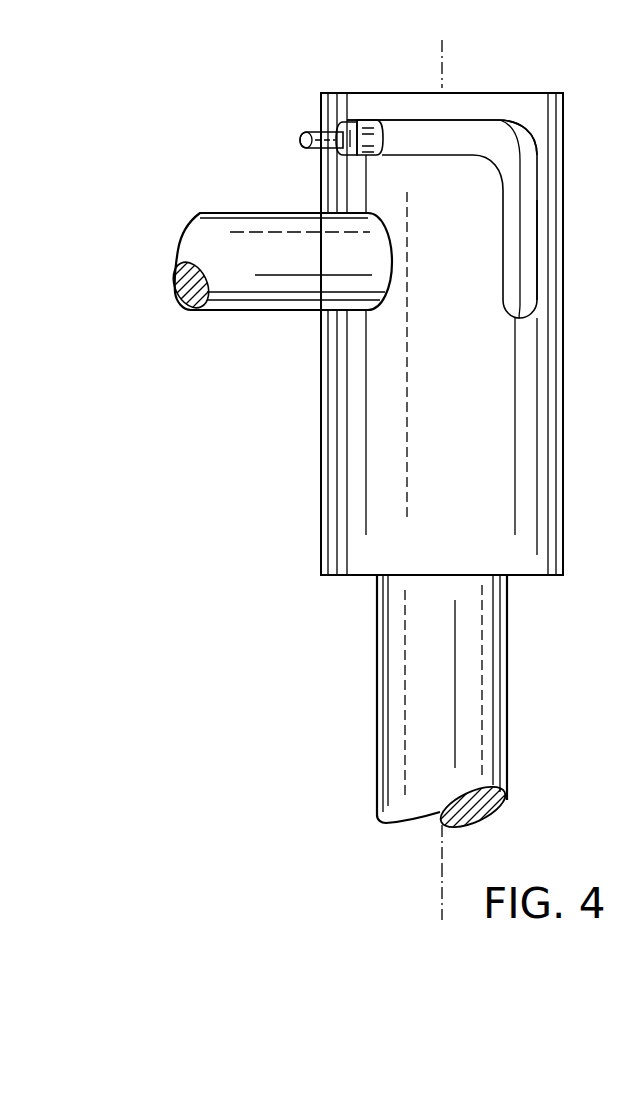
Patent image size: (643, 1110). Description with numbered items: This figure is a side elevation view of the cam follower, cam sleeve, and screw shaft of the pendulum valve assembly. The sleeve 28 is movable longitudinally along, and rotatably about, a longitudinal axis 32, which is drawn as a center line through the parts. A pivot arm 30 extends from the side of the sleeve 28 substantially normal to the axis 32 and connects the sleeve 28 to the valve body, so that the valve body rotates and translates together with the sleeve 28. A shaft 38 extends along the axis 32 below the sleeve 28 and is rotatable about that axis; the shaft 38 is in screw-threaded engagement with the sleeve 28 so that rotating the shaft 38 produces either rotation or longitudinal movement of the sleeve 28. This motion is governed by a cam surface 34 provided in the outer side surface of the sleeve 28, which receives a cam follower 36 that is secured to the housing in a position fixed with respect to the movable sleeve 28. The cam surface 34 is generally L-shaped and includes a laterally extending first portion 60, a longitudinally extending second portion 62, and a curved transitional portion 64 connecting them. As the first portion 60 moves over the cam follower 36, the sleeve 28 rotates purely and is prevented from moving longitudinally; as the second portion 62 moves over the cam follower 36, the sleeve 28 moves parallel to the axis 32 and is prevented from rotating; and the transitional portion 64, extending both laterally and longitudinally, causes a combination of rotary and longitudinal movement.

The sleeve 28 is at (322, 456).
The pivot arm 30 is at (233, 312).
The longitudinal axis 32 is at (440, 858).
The cam surface 34 is at (535, 208).
The cam follower 36 is at (340, 134).
The shaft 38 is at (382, 690).
The first portion 60 is at (475, 120).
The second portion 62 is at (537, 280).
The transitional portion 64 is at (525, 138).